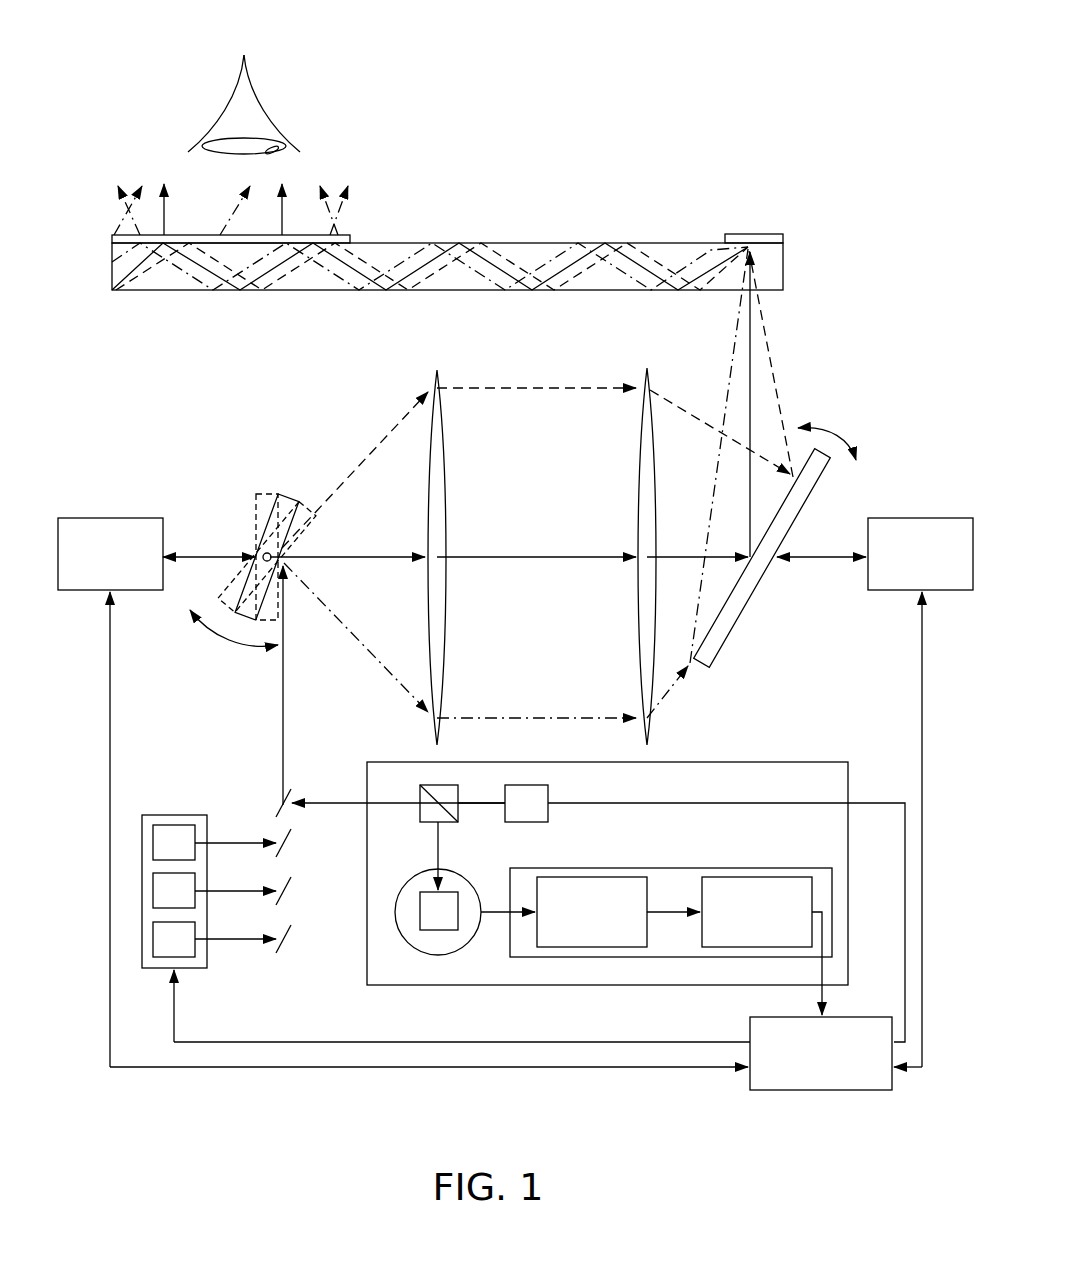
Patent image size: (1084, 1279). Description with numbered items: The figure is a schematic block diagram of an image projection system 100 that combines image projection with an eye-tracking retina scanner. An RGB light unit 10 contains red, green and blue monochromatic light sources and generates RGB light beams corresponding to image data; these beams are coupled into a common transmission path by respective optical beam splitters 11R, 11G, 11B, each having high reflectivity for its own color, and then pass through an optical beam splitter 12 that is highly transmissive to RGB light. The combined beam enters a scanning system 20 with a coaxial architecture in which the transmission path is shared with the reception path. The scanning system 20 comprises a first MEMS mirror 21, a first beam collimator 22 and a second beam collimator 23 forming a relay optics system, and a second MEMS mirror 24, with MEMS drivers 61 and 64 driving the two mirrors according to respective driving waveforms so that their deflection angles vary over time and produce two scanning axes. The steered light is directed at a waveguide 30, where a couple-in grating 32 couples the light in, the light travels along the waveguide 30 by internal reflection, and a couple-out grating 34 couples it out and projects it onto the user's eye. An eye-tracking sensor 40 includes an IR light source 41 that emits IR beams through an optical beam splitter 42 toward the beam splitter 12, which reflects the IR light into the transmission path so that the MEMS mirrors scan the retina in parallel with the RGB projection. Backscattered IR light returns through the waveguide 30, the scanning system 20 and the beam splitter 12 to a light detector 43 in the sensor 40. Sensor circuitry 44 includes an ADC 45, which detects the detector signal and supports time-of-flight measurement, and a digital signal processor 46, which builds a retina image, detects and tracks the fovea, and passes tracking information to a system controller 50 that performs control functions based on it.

The image projection system 100 is at (151, 60).
The RGB light unit 10 is at (174, 814).
The optical beam splitter 11R is at (290, 840).
The optical beam splitter 11G is at (290, 888).
The optical beam splitter 11B is at (290, 936).
The optical beam splitter 12 is at (277, 797).
The scanning system 20 is at (251, 393).
The first MEMS mirror 21 is at (288, 492).
The first beam collimator 22 is at (437, 369).
The second beam collimator 23 is at (647, 367).
The second MEMS mirror 24 is at (827, 446).
The waveguide 30 is at (786, 262).
The couple-in grating 32 is at (745, 233).
The couple-out grating 34 is at (112, 240).
The eye-tracking sensor 40 is at (754, 761).
The IR light source 41 is at (549, 792).
The optical beam splitter 42 is at (459, 820).
The light detector 43 is at (406, 882).
The sensor circuitry 44 is at (674, 867).
The ADC 45 is at (588, 876).
The digital signal processor 46 is at (756, 876).
The system controller 50 is at (830, 1091).
The MEMS driver 61 is at (110, 517).
The MEMS driver 64 is at (922, 517).